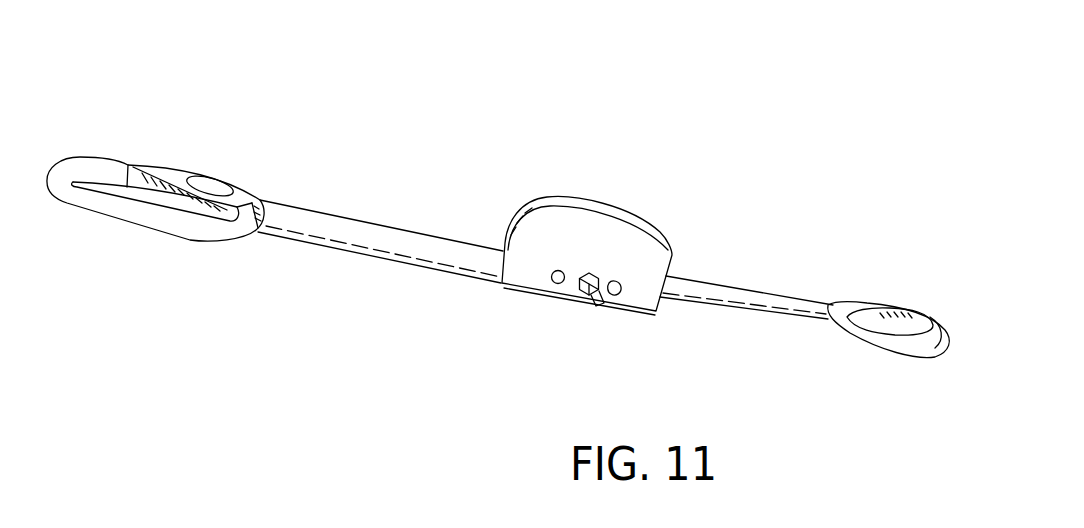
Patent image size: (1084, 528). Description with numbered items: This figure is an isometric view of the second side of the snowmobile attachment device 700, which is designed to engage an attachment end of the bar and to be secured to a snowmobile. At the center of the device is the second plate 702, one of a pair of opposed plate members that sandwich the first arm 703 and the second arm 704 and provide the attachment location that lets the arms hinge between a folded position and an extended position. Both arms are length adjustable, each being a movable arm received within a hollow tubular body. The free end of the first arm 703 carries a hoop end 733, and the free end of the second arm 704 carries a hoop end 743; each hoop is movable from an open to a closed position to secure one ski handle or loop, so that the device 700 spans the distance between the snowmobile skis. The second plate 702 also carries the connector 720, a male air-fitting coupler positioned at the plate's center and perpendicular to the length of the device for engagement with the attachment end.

The snowmobile attachment device 700 is at (486, 117).
The second plate 702 is at (608, 240).
The first arm 703 is at (366, 230).
The second arm 704 is at (720, 297).
The connector 720 is at (595, 303).
The hoop end 733 is at (85, 170).
The hoop end 743 is at (917, 322).